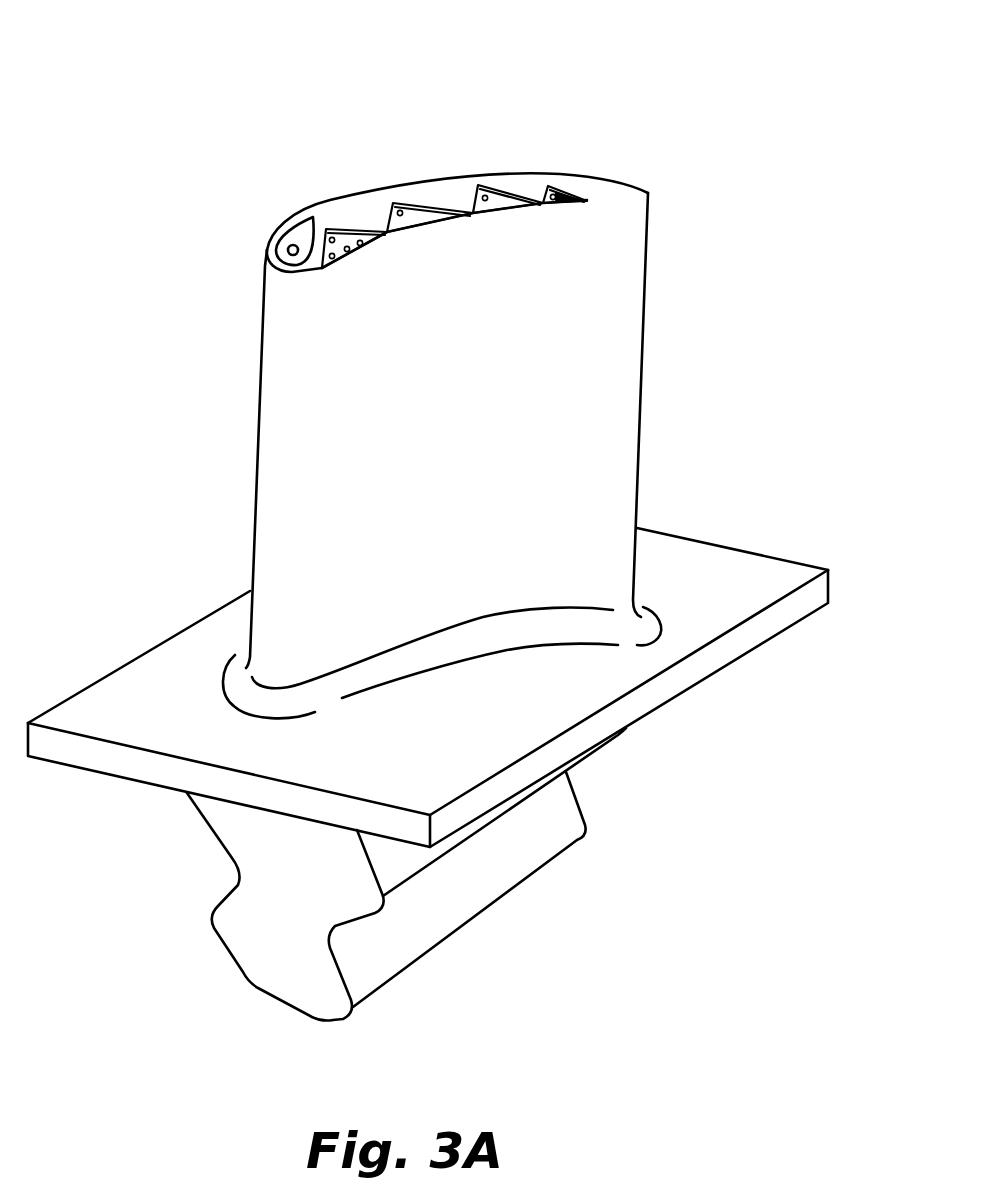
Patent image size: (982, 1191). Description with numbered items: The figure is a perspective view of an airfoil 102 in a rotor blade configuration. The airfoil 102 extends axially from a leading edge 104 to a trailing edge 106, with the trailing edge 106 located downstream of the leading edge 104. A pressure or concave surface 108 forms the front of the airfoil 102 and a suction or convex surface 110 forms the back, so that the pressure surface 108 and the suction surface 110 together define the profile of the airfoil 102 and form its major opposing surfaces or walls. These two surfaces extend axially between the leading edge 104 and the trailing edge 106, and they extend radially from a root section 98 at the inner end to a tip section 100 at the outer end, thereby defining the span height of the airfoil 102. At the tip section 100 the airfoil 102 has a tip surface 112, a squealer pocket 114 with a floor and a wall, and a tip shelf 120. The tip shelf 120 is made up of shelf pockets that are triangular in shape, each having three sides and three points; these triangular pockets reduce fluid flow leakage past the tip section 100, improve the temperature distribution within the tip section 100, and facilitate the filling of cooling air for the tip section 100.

The root section 98 is at (248, 640).
The tip section 100 is at (255, 247).
The airfoil 102 is at (710, 93).
The leading edge 104 is at (278, 281).
The trailing edge 106 is at (653, 228).
The pressure or concave surface 108 is at (597, 375).
The suction or convex surface 110 is at (420, 176).
The tip surface 112 is at (353, 218).
The squealer pocket 114 is at (293, 237).
The tip shelf 120 is at (329, 273).